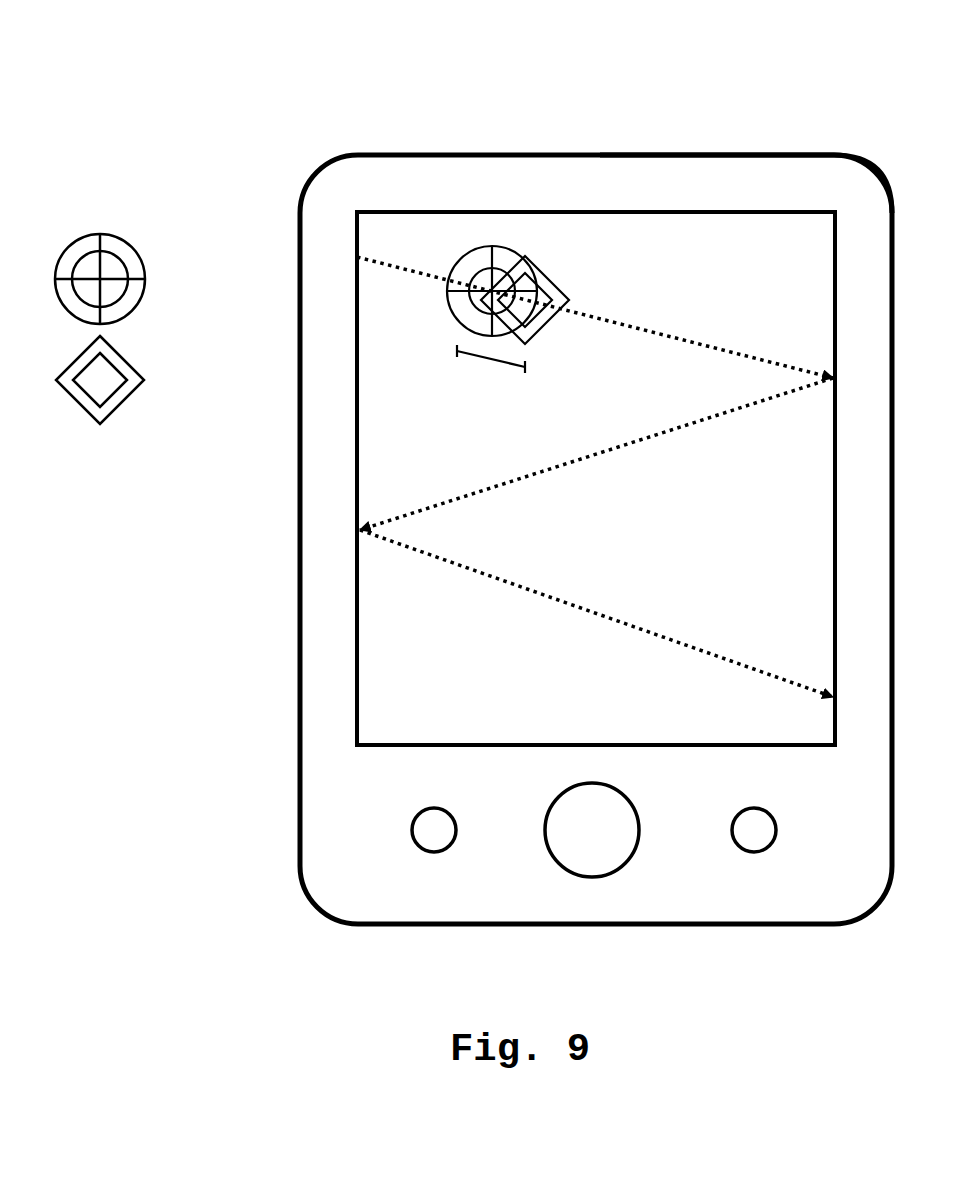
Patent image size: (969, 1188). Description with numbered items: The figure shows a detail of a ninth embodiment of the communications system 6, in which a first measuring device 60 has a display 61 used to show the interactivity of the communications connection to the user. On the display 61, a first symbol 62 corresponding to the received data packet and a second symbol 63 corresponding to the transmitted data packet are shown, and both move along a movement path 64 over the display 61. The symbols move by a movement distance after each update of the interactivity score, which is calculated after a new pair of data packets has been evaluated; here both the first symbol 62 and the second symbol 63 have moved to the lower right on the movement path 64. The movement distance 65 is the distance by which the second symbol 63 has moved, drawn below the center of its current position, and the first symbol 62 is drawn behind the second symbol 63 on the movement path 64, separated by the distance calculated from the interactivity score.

The communications system 6 is at (665, 97).
The first measuring device 60 is at (796, 156).
The display 61 is at (717, 212).
The first symbol 62 is at (120, 200).
The second symbol 63 is at (118, 445).
The movement path 64 is at (598, 473).
The movement distance 65 is at (484, 373).